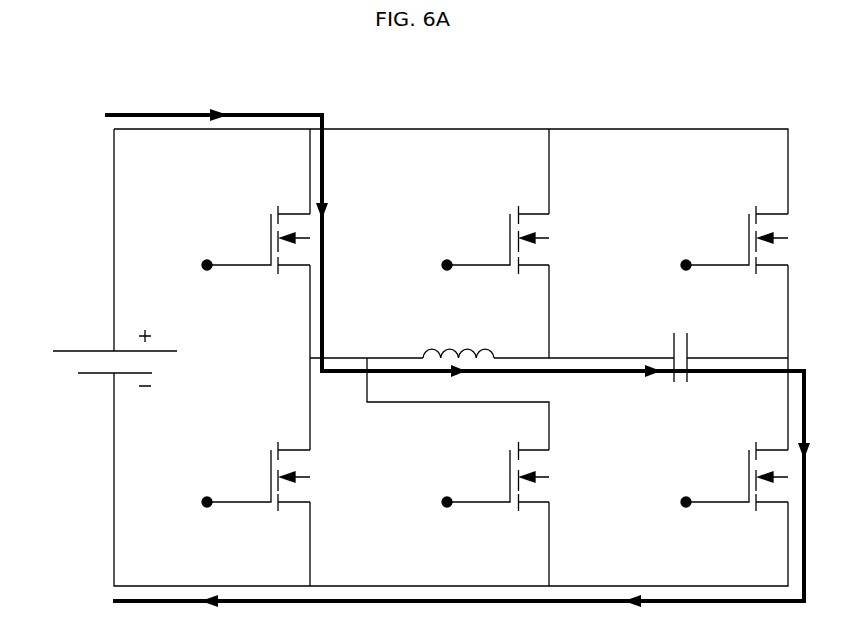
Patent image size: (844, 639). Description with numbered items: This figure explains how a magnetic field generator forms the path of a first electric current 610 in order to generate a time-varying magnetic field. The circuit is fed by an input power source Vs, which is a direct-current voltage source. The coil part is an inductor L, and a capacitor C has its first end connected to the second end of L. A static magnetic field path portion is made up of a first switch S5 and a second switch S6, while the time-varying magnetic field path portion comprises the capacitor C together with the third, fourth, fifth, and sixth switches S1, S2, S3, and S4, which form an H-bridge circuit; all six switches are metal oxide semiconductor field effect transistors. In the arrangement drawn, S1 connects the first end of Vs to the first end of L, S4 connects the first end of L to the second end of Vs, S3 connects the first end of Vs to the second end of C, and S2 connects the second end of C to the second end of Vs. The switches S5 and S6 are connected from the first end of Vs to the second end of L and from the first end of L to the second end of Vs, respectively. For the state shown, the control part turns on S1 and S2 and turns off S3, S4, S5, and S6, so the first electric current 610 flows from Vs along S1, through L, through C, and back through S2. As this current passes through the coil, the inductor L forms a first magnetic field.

The first electric current 610 is at (253, 113).
The third switch S1 is at (256, 240).
The fourth switch S2 is at (734, 476).
The fifth switch S3 is at (734, 240).
The sixth switch S4 is at (256, 476).
The first switch S5 is at (495, 240).
The second switch S6 is at (495, 476).
The inductor L is at (458, 339).
The capacitor C is at (679, 344).
The input power source Vs is at (96, 358).